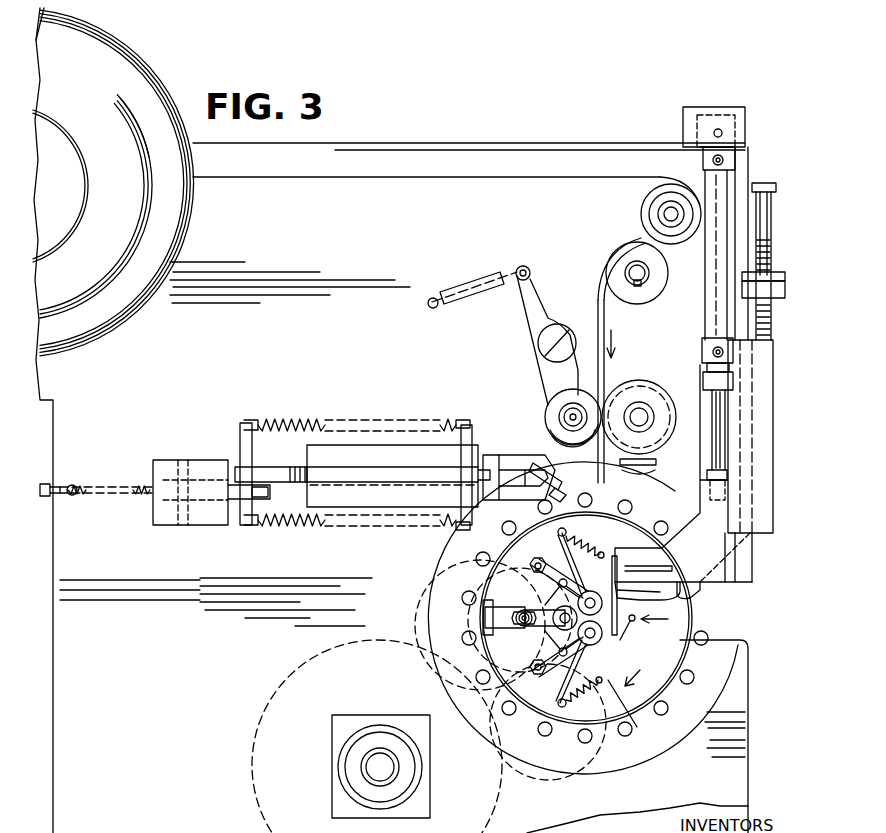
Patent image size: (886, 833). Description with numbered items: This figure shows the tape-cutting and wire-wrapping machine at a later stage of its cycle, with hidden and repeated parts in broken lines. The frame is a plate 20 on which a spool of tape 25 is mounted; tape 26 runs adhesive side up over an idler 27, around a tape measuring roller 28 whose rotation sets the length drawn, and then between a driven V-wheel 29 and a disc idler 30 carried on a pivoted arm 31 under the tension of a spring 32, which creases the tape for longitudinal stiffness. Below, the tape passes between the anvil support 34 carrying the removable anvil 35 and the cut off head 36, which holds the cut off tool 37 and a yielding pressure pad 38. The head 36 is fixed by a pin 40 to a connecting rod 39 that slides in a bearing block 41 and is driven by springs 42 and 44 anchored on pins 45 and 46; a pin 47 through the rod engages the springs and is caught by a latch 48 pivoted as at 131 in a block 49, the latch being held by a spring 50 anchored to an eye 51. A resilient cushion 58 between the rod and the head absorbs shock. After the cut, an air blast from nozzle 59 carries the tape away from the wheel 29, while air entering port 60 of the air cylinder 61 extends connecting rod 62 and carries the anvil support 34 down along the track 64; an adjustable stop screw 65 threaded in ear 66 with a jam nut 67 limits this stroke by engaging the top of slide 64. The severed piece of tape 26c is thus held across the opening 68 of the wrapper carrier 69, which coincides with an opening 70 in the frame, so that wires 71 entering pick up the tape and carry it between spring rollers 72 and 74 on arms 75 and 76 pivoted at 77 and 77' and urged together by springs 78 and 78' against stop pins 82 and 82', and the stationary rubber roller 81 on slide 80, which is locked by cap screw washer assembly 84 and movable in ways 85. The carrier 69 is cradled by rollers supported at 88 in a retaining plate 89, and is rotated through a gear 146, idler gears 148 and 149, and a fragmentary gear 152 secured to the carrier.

The frame plate 20 is at (415, 152).
The spool of tape 25 is at (176, 222).
The tape 26 is at (600, 310).
The severed piece of tape 26c is at (622, 597).
The idler 27 is at (641, 214).
The tape measuring roller 28 is at (648, 304).
The V-wheel 29 is at (636, 383).
The disc idler 30 is at (560, 392).
The pivoted arm 31 is at (537, 295).
The spring 32 is at (440, 300).
The anvil support 34 is at (710, 552).
The anvil 35 is at (630, 540).
The cut off head 36 is at (500, 455).
The cut off tool 37 is at (560, 474).
The yielding pressure pad 38 is at (551, 494).
The connecting rod 39 is at (290, 456).
The pin 40 is at (494, 455).
The bearing block 41 is at (368, 500).
The spring 42 is at (318, 425).
The spring 44 is at (308, 522).
The pin 45 is at (466, 422).
The pin 46 is at (457, 527).
The pin 47 is at (244, 508).
The latch 48 is at (262, 506).
The block 49 is at (206, 518).
The spring 50 is at (124, 496).
The eye 51 is at (63, 497).
The resilient cushion 58 is at (508, 468).
The nozzle 59 is at (658, 463).
The port 60 is at (724, 160).
The air cylinder 61 is at (708, 262).
The connecting rod 62 is at (714, 410).
The track 64 is at (765, 430).
The adjustable stop screw 65 is at (772, 208).
The ear 66 is at (770, 291).
The jam nut 67 is at (771, 272).
The opening 68 is at (677, 633).
The wrapper carrier 69 is at (664, 661).
The opening 70 is at (745, 641).
The wires 71 is at (629, 650).
The spring roller 72 is at (593, 592).
The spring roller 74 is at (593, 642).
The arm 75 is at (550, 548).
The arm 76 is at (550, 690).
The pivot 77 is at (524, 564).
The pivot 77' is at (523, 666).
The spring 78 is at (588, 540).
The spring 78' is at (595, 694).
The slide 80 is at (502, 626).
The stationary rubber roller 81 is at (546, 611).
The stop pin 82 is at (570, 578).
The stop pin 82' is at (567, 656).
The cap screw washer assembly 84 is at (525, 627).
The ways 85 is at (490, 606).
The roller support 88 is at (482, 552).
The retaining plate 89 is at (752, 696).
The pivot 131 is at (185, 460).
The gear 146 is at (258, 716).
The idler gear 148 is at (527, 785).
The idler gear 149 is at (414, 599).
The fragmentary gear 152 is at (640, 714).